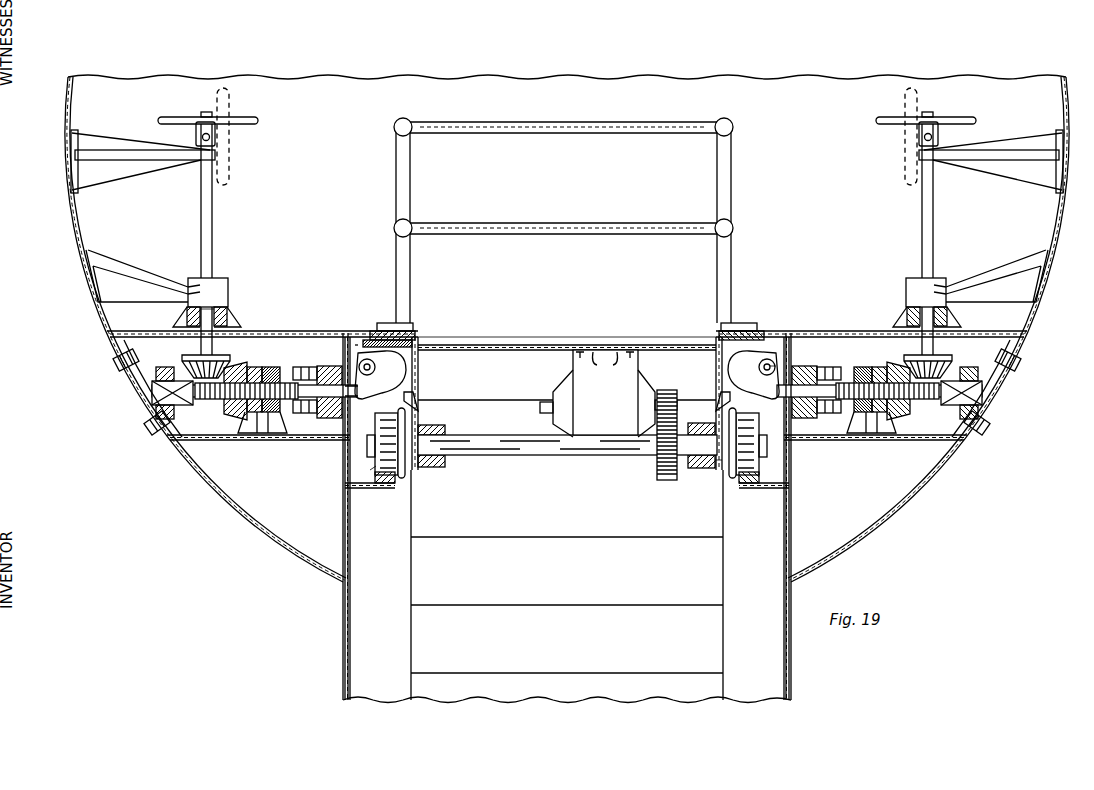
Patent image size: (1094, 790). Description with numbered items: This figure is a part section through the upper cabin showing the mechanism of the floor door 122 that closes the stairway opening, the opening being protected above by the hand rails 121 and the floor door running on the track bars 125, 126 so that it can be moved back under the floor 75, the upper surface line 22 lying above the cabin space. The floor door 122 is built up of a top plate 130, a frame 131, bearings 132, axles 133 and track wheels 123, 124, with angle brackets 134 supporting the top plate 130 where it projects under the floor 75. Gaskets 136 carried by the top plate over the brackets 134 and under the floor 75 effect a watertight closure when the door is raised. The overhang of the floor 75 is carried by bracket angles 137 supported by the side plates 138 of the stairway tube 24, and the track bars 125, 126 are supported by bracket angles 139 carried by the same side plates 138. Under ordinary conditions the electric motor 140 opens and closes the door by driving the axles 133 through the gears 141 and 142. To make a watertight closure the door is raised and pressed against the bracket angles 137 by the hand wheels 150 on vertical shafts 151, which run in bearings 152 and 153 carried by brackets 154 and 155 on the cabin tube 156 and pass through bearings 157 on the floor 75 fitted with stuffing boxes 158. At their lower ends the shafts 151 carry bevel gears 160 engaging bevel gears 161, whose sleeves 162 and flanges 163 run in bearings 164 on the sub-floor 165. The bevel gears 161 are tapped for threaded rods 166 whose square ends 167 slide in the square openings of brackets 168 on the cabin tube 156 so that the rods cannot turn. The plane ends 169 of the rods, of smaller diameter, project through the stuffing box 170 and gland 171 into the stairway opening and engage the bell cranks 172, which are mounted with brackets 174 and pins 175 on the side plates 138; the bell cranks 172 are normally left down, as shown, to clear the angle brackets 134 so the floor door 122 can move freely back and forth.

The waterline / deck surface 22 is at (300, 100).
The stairway tube 24 is at (537, 657).
The floor 75 is at (311, 331).
The hand rails 121 is at (733, 176).
The floor door 122 is at (565, 345).
The track wheel 123 is at (373, 463).
The track wheel 124 is at (762, 462).
The track bar 125 is at (396, 480).
The track bar 126 is at (752, 494).
The top plate 130 is at (505, 345).
The frame 131 is at (418, 363).
The bearings 132 is at (434, 468).
The axles 133 is at (527, 458).
The angle brackets 134 is at (410, 404).
The gaskets 136 is at (413, 344).
The bracket angles 137 is at (413, 332).
The side plates 138 is at (342, 615).
The bracket angles 139 is at (373, 489).
The electric motor 140 is at (565, 382).
The gear 141 is at (660, 388).
The gear 142 is at (658, 481).
The hand wheels 150 is at (259, 121).
The vertical shafts 151 is at (214, 230).
The bearing 152 is at (198, 160).
The bearing 153 is at (228, 278).
The bracket 154 is at (103, 135).
The bracket 155 is at (133, 262).
The cabin tube 156 is at (68, 223).
The bearings 157 is at (240, 322).
The stuffing boxes 158 is at (228, 308).
The bevel gears 160 is at (189, 364).
The bevel gears 161 is at (227, 417).
The sleeves 162 is at (253, 372).
The flanges 163 is at (281, 375).
The bearings 164 is at (269, 372).
The sub-floor 165 is at (270, 437).
The threaded rods 166 is at (207, 394).
The square ends 167 is at (150, 386).
The brackets 168 is at (117, 343).
The plane ends 169 is at (403, 396).
The stuffing box 170 is at (328, 419).
The gland 171 is at (304, 417).
The bell cranks 172 is at (395, 381).
The brackets 174 is at (356, 346).
The pins 175 is at (775, 367).